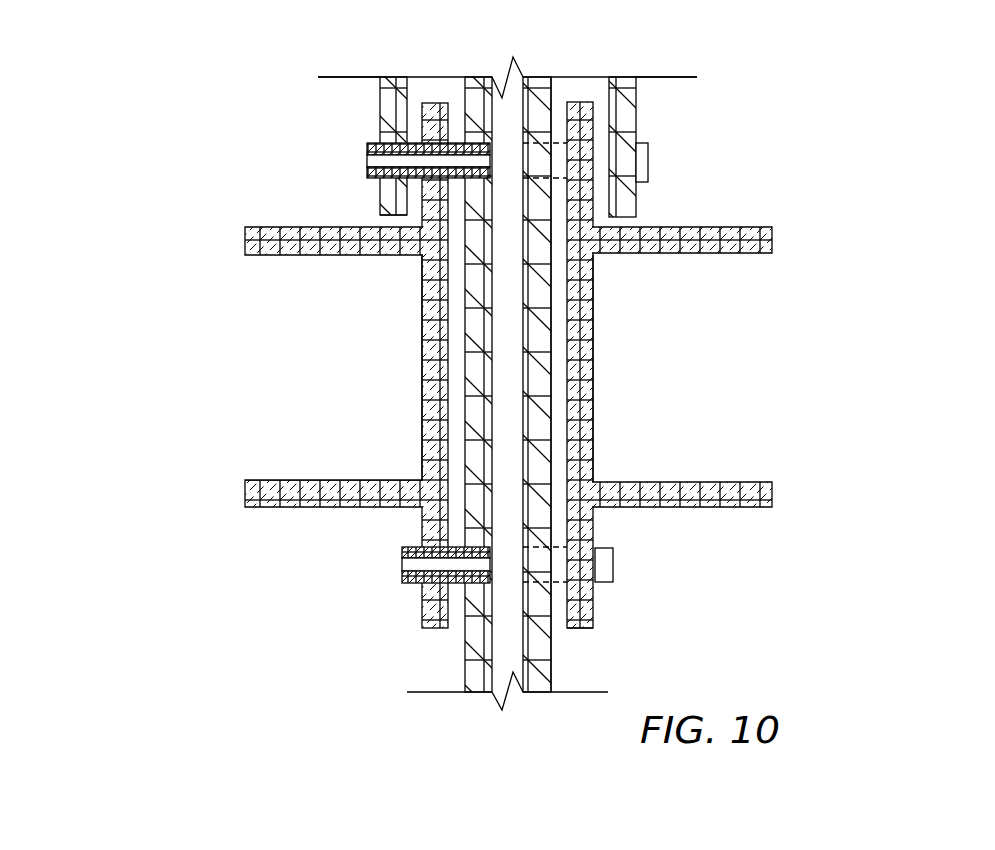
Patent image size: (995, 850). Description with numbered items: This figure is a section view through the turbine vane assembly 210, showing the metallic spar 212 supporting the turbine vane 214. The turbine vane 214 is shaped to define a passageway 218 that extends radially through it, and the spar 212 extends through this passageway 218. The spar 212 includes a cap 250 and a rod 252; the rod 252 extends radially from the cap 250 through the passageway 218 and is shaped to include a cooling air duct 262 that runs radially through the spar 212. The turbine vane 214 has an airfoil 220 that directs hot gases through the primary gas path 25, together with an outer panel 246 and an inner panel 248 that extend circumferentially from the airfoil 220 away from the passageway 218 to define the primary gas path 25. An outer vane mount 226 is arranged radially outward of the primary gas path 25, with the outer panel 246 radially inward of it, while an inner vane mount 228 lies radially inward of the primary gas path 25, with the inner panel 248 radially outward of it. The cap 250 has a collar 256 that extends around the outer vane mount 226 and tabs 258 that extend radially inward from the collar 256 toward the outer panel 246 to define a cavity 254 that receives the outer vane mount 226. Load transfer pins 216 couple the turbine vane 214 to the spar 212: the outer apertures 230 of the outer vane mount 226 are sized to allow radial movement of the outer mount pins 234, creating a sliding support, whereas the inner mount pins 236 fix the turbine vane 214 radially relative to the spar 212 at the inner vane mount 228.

The turbine vane assembly 210 is at (182, 97).
The spar 212 is at (575, 93).
The turbine vane 214 is at (737, 357).
The load transfer pins 216 is at (328, 140).
The passageway 218 is at (460, 637).
The airfoil 220 is at (593, 340).
The outer vane mount 226 is at (597, 130).
The inner vane mount 228 is at (600, 603).
The outer apertures 230 is at (422, 138).
The outer mount pins 234 is at (368, 180).
The inner mount pins 236 is at (402, 578).
The outer panel 246 is at (243, 240).
The inner panel 248 is at (243, 493).
The cap 250 is at (733, 95).
The rod 252 is at (557, 383).
The cavity 254 is at (433, 93).
The collar 256 is at (380, 98).
The tabs 258 is at (380, 212).
The cooling air duct 262 is at (513, 147).
The primary gas path 25 is at (292, 377).